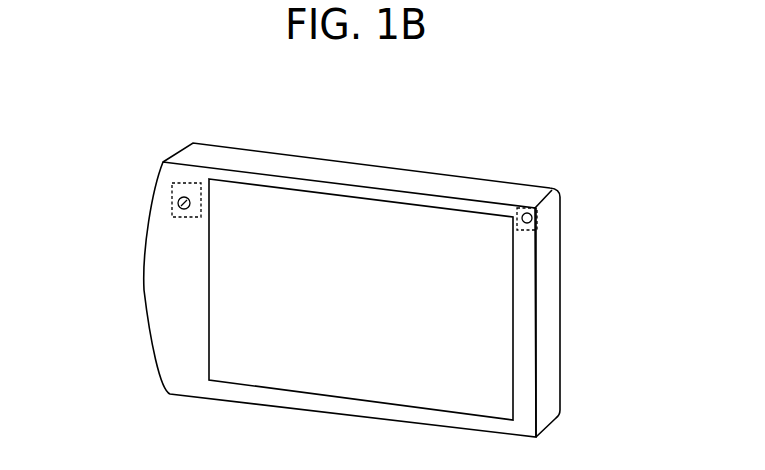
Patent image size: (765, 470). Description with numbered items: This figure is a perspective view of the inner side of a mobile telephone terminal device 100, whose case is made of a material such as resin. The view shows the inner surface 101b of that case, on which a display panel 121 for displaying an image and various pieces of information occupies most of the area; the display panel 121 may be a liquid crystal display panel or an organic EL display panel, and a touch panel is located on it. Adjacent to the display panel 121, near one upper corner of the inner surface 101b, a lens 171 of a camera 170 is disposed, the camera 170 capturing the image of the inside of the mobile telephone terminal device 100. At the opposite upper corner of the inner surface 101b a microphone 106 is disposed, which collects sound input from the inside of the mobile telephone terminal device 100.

The mobile telephone terminal device 100 is at (577, 167).
The inner surface 101b is at (527, 387).
The display panel 121 is at (394, 197).
The camera 170 is at (188, 186).
The lens 171 is at (172, 203).
The microphone 106 is at (537, 220).